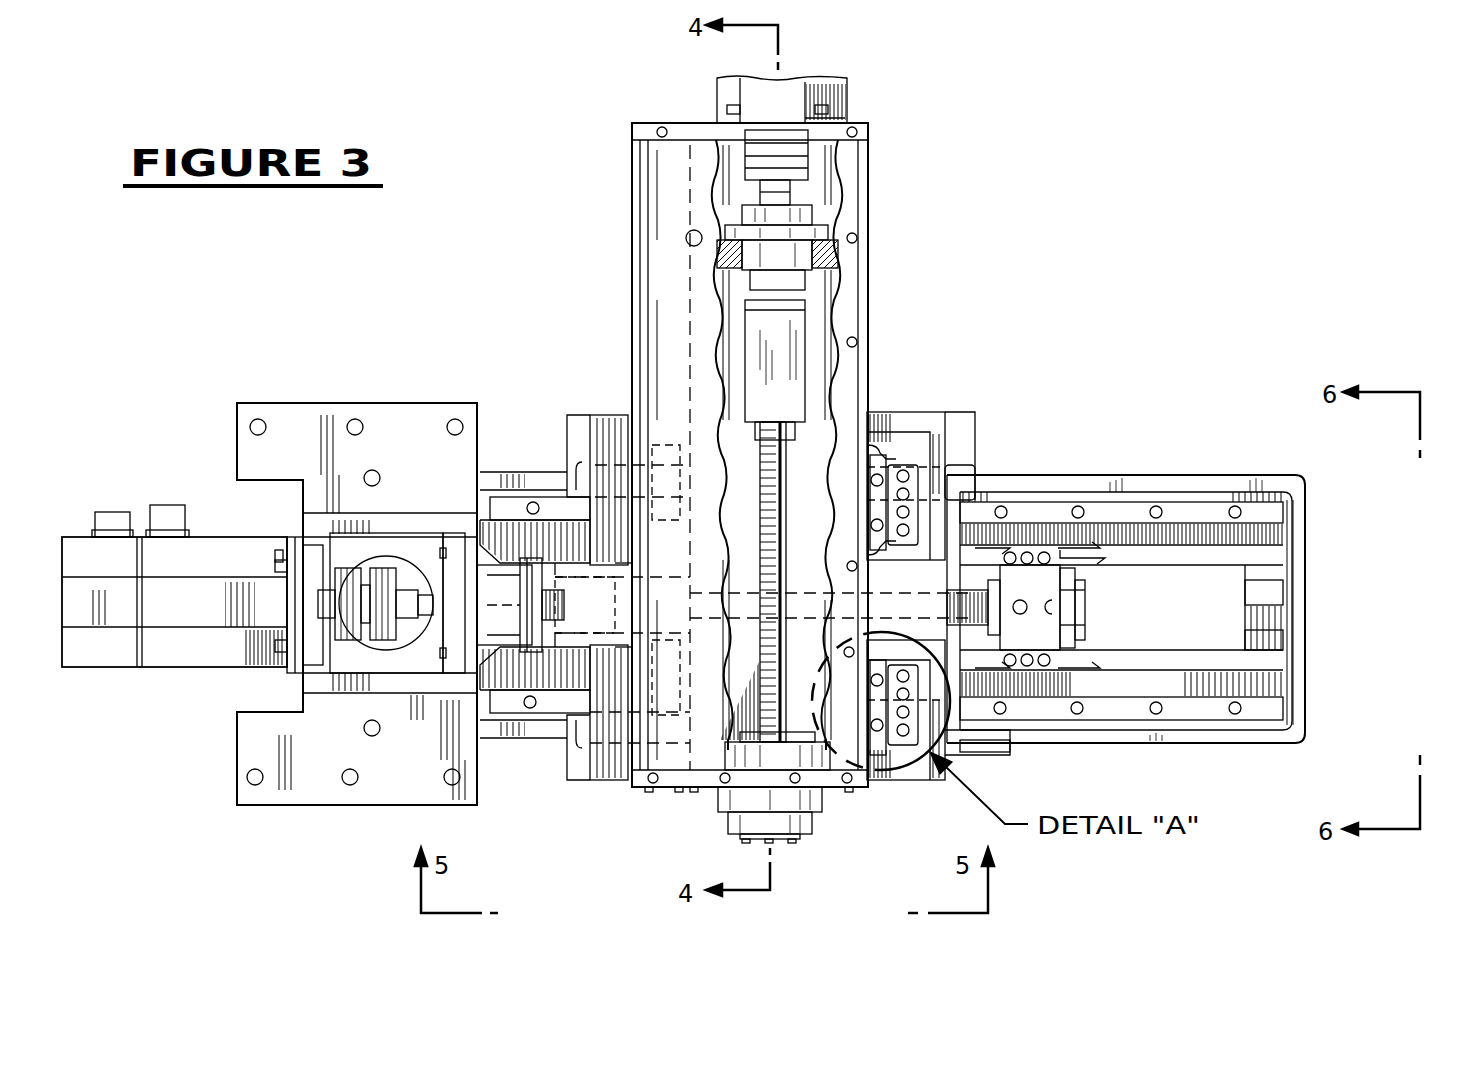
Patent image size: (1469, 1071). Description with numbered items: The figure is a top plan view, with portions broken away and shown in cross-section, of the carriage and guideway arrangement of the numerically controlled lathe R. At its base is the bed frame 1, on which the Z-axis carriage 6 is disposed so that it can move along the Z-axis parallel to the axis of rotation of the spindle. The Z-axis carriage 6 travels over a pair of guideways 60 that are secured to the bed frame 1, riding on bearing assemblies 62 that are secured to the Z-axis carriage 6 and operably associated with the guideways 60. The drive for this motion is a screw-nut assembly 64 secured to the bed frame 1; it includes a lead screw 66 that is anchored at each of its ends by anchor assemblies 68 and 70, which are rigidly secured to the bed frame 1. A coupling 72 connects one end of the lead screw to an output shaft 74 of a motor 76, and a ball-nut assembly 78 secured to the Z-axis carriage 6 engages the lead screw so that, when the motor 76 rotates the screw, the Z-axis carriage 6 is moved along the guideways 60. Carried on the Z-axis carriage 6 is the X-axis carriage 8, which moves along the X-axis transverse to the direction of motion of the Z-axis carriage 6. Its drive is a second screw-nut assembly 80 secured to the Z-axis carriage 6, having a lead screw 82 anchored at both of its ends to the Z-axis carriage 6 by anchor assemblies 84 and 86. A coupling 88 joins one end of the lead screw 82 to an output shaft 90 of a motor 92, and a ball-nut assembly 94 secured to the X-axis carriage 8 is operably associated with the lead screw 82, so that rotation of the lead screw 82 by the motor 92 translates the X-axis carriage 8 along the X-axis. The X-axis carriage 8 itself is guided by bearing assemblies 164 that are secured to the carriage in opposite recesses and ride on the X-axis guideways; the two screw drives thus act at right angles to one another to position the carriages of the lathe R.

The bed frame 1 is at (1144, 471).
The Z-axis carriage 6 is at (959, 412).
The X-axis carriage 8 is at (765, 457).
The guideways 60 is at (1283, 548).
The bearing assemblies 62 is at (579, 462).
The screw-nut assembly 64 is at (585, 734).
The lead screw 66 is at (808, 590).
The anchor assembly 68 is at (510, 659).
The anchor assembly 70 is at (1097, 606).
The coupling 72 is at (386, 566).
The output shaft 74 is at (294, 660).
The motor 76 is at (161, 670).
The ball-nut assembly 78 is at (604, 574).
The screw-nut assembly 80 is at (782, 438).
The lead screw 82 is at (762, 528).
The anchor assembly 84 is at (822, 811).
The anchor assembly 86 is at (814, 232).
The coupling 88 is at (805, 176).
The output shaft 90 is at (826, 120).
The motor 92 is at (836, 89).
The ball-nut assembly 94 is at (802, 322).
The bearing assemblies 164 is at (890, 452).
The numerically controlled lathe R is at (1114, 254).